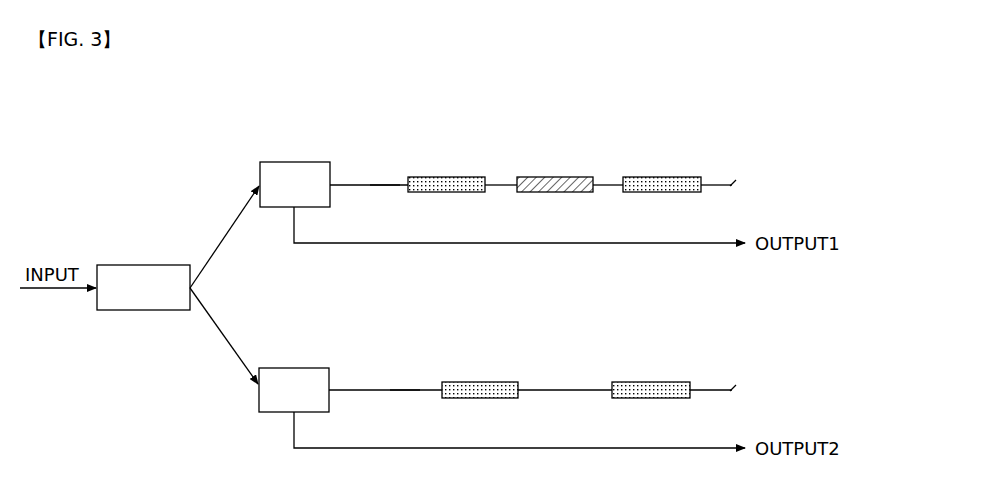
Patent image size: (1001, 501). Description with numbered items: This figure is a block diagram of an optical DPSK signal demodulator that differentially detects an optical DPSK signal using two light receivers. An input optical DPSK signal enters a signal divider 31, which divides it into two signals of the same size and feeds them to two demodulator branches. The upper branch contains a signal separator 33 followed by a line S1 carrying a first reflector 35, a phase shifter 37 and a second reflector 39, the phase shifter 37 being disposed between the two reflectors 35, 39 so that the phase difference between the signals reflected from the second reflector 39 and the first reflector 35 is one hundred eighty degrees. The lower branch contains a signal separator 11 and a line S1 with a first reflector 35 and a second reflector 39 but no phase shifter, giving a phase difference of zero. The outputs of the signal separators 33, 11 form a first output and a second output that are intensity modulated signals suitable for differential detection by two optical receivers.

The signal divider 31 is at (140, 265).
The signal separator 33 is at (298, 162).
The signal separator 11 is at (297, 368).
The first reflector 35 is at (448, 177).
The phase shifter 37 is at (556, 177).
The second reflector 39 is at (663, 177).
The signal line S1 is at (380, 184).